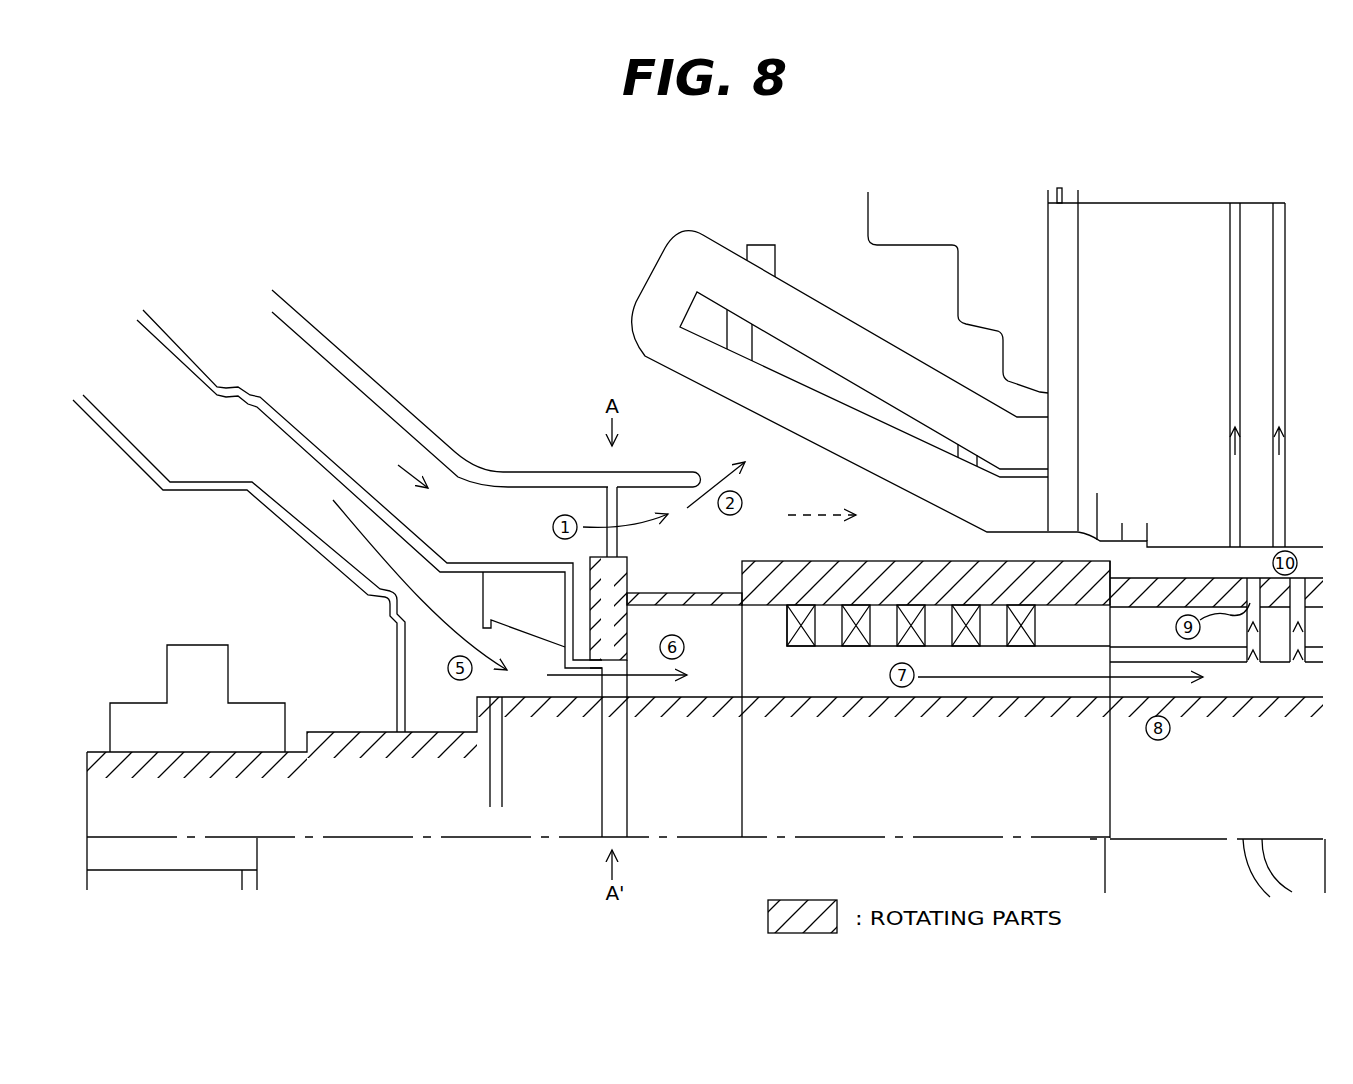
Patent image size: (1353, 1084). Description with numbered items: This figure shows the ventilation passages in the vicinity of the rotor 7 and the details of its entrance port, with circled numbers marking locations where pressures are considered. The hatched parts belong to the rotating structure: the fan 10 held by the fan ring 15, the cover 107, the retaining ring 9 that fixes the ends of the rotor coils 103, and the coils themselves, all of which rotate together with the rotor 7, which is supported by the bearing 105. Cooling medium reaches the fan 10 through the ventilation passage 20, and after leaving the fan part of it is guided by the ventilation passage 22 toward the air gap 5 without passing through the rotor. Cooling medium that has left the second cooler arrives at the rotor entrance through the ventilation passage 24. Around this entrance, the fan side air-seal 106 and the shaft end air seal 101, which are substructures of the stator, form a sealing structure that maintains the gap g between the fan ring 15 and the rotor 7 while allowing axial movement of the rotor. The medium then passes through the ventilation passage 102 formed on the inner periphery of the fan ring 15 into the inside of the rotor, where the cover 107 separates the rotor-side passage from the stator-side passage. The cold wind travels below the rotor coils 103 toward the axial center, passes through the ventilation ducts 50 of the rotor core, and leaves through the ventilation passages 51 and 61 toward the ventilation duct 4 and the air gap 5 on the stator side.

The ventilation duct 4 is at (1236, 370).
The air gap 5 is at (1210, 555).
The rotor 7 is at (443, 760).
The retaining ring 9 is at (888, 562).
The fan 10 is at (620, 541).
The fan ring 15 is at (633, 628).
The ventilation passage 20 is at (428, 480).
The ventilation passage 22 is at (800, 515).
The ventilation passage 24 is at (440, 625).
The ventilation duct 50 is at (1257, 613).
The ventilation passage 51 is at (1247, 647).
The ventilation passage 61 is at (1232, 445).
The shaft end air seal 101 is at (395, 720).
The ventilation passage 102 is at (618, 678).
The rotor coils 103 is at (802, 648).
The bearing 105 is at (187, 652).
The fan side air-seal 106 is at (540, 637).
The cover 107 is at (714, 592).
The gap g is at (580, 613).